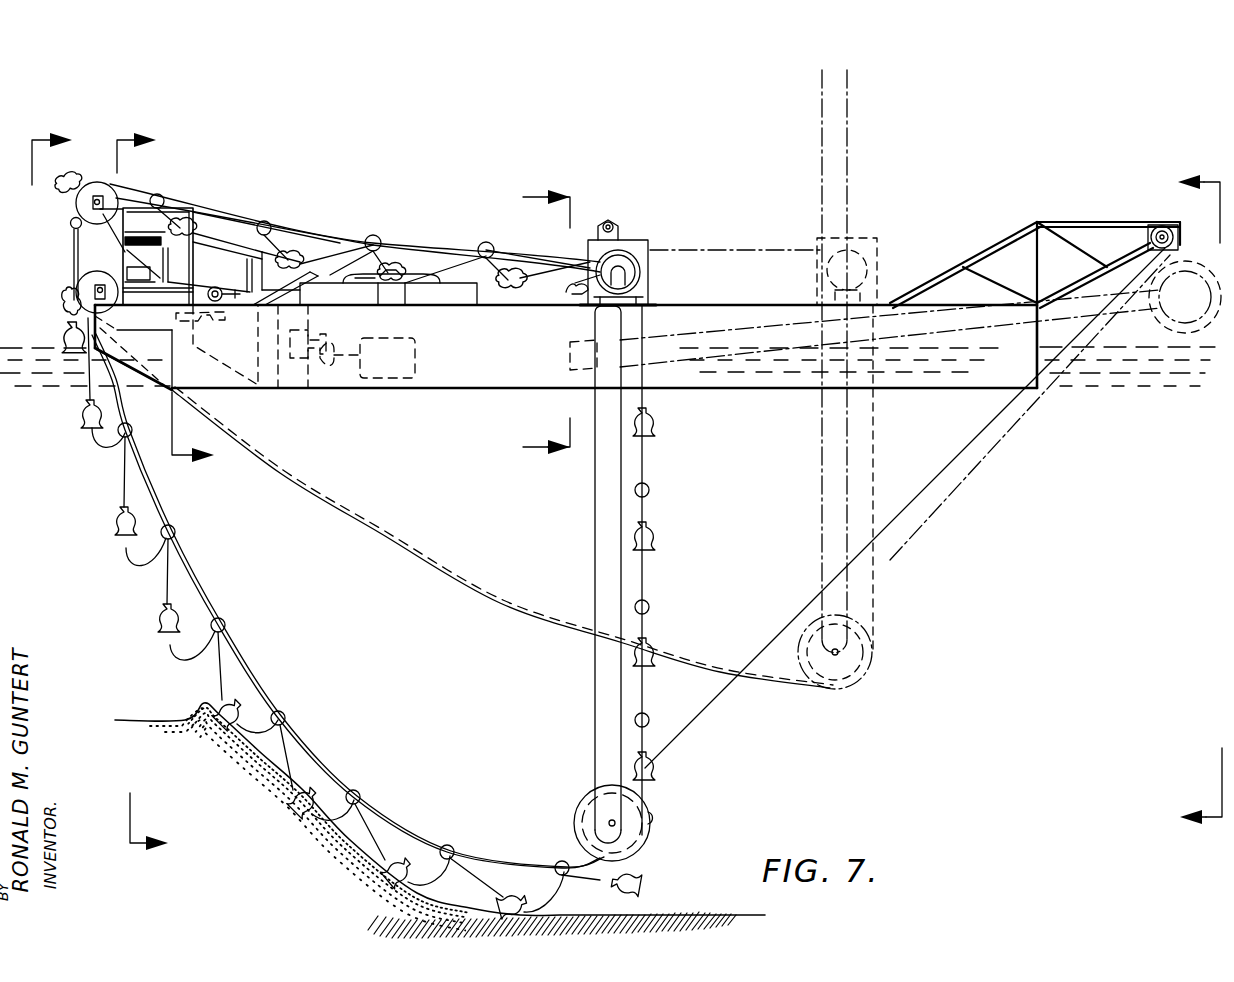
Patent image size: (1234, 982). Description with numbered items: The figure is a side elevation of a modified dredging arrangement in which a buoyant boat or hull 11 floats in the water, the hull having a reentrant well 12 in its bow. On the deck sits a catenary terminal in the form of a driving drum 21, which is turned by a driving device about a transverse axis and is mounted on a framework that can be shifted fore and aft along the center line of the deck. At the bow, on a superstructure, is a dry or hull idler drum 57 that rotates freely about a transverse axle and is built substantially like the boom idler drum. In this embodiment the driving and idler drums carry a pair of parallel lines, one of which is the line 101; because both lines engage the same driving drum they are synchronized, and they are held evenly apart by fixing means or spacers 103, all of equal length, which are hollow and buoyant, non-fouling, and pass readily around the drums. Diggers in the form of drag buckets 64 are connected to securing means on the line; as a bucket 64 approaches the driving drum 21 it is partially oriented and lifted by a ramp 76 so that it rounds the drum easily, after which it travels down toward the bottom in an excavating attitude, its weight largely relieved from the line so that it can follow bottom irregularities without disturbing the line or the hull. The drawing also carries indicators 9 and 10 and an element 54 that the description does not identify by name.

The hull idler drum 57 is at (70, 214).
The fixing means 103 is at (377, 238).
The line 101 is at (550, 251).
The ramp 76 is at (568, 288).
The drag bucket 64 is at (513, 290).
The driving drum 21 is at (653, 271).
The spud roller wheel 54 is at (582, 820).
The section line 9- 9 is at (114, 493).
The section line 10- 10 is at (1179, 499).
The hull 11 is at (172, 308).
The reentrant well 12 is at (548, 326).